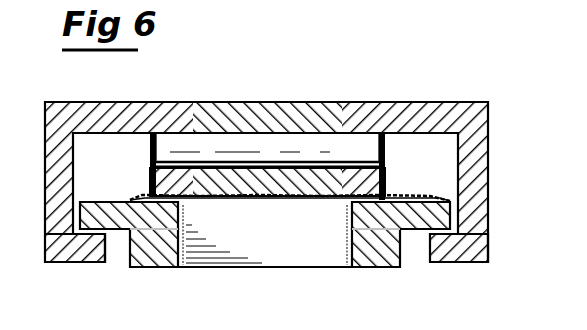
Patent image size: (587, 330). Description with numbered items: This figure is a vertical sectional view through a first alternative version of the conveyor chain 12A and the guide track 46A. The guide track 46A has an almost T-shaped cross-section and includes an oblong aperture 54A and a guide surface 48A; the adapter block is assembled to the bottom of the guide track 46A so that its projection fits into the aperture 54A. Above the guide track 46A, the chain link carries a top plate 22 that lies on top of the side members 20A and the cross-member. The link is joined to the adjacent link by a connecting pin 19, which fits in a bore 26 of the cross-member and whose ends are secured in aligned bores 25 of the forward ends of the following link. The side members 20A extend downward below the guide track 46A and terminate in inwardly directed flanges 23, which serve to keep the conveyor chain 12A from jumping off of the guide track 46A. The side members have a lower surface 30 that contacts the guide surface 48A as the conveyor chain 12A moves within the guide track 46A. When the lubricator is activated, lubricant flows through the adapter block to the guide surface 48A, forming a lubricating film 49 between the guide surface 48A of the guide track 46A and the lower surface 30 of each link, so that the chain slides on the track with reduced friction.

The conveyor chain 12A is at (409, 100).
The top plate 22 is at (123, 102).
The inwardly directed flanges 23 is at (78, 258).
The side members 20A is at (148, 175).
The connecting pin 19 is at (288, 138).
The bore 26 is at (236, 137).
The aligned bores 25 is at (362, 137).
The lower surface 30 is at (405, 167).
The lubricating film 49 is at (132, 198).
The guide surface 48A is at (437, 201).
The guide track 46A is at (379, 272).
The oblong aperture 54A is at (285, 250).